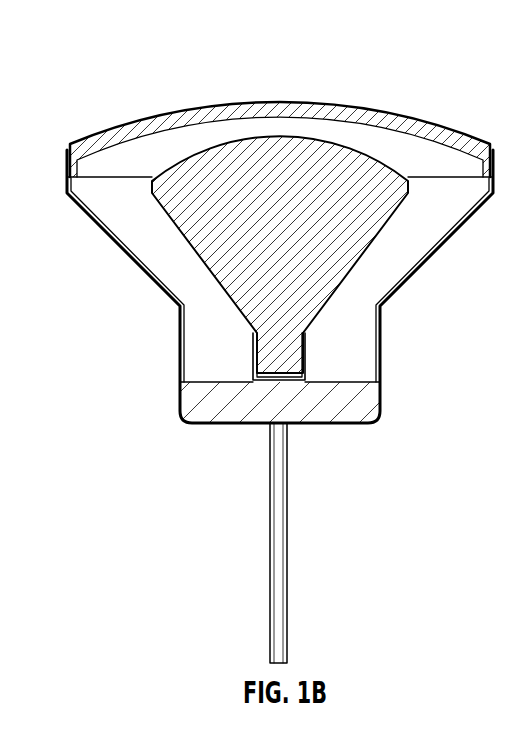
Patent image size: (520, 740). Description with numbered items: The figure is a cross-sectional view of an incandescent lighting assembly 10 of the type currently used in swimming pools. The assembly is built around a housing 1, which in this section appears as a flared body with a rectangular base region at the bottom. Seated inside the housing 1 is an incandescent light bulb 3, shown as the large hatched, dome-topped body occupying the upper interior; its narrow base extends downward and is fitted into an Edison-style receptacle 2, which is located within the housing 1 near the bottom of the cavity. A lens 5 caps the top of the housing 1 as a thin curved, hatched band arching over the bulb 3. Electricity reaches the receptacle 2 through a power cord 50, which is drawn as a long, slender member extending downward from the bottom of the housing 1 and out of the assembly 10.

The incandescent lighting assembly 10 is at (417, 61).
The housing 1 is at (163, 293).
The lens 5 is at (150, 118).
The incandescent light bulb 3 is at (390, 215).
The Edison-style receptacle 2 is at (303, 350).
The power cord 50 is at (287, 548).